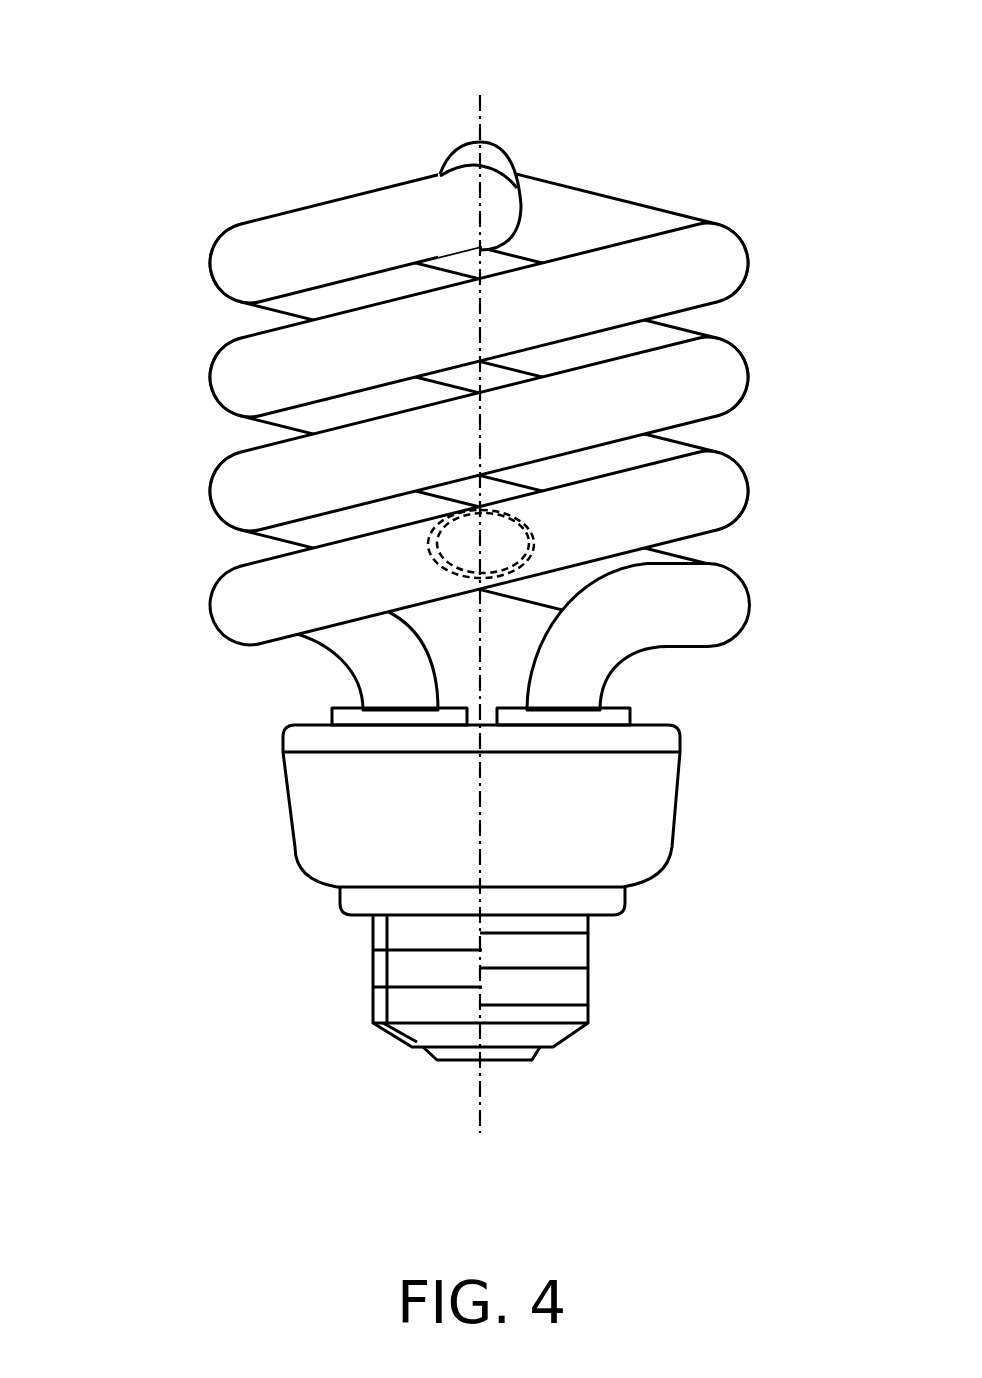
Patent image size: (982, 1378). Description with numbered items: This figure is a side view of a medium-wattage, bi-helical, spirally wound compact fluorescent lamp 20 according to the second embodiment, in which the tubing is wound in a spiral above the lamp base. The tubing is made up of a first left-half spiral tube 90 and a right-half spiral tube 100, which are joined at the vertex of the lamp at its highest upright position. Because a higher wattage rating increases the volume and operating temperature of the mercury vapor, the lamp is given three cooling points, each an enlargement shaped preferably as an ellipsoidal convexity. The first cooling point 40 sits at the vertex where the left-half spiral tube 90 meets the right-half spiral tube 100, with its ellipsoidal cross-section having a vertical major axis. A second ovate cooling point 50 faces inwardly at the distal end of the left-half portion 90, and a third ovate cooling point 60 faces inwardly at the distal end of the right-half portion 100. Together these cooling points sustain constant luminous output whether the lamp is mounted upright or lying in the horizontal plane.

The compact fluorescent lamp 20 is at (197, 107).
The first cooling point 40 is at (480, 141).
The second cooling point 50 is at (533, 532).
The third cooling point 60 is at (433, 533).
The left-half spiral tube 90 is at (207, 247).
The right-half spiral tube 100 is at (757, 253).